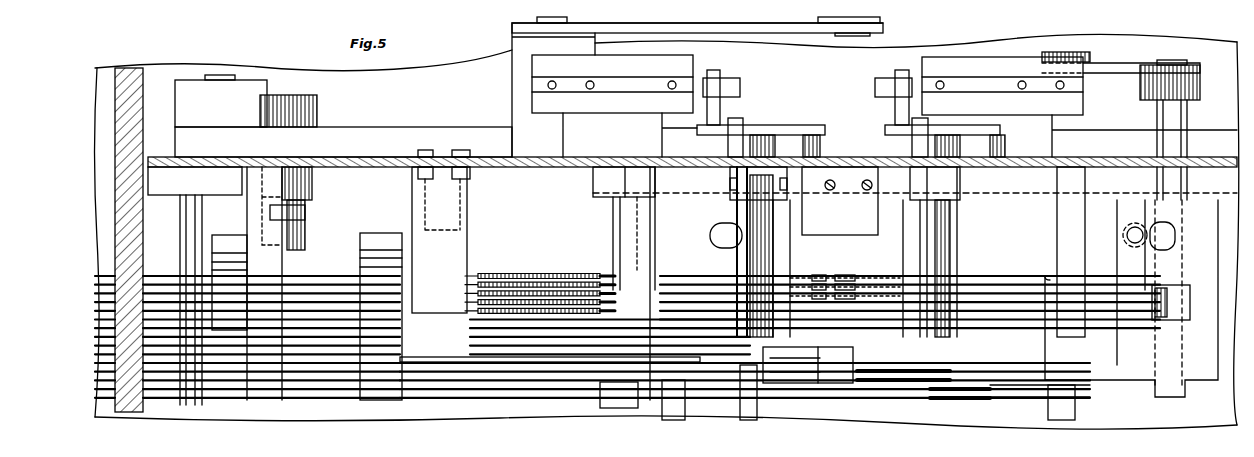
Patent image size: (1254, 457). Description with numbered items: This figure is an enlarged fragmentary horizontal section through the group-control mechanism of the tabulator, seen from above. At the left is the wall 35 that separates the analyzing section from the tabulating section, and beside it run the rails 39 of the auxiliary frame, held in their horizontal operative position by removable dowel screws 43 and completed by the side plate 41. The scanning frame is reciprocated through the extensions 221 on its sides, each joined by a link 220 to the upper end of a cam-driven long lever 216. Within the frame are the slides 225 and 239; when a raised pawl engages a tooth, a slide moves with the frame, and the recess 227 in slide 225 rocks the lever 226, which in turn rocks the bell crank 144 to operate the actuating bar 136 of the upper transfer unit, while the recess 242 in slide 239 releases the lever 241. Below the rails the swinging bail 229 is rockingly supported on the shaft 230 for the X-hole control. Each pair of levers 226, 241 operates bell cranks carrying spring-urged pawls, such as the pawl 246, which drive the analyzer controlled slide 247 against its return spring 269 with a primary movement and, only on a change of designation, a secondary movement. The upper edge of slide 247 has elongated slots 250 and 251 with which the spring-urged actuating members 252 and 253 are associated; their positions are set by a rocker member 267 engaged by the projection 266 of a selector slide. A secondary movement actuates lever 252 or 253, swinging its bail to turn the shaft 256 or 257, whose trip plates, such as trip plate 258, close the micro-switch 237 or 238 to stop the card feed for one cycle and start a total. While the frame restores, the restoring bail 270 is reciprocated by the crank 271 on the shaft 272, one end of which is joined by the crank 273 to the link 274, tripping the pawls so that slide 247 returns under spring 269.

The wall 35 is at (143, 110).
The dowel screws 43 is at (225, 78).
The rails 39 is at (452, 130).
The side plate 41 is at (386, 157).
The extensions 221 is at (520, 95).
The link 220 is at (776, 33).
The long lever 216 is at (882, 22).
The micro-switch 238 is at (685, 66).
The micro-switch 237 is at (922, 63).
The trip plate 258 is at (806, 125).
The shaft 256 is at (752, 120).
The shaft 257 is at (938, 120).
The link 274 is at (1092, 57).
The crank 273 is at (1092, 70).
The shaft 272 is at (1182, 118).
The bell crank 144 is at (208, 245).
The actuating bar 136 is at (153, 273).
The swinging bail 229 is at (310, 200).
The shaft 230 is at (306, 230).
The lever 226 is at (346, 275).
The return spring 269 is at (552, 273).
The analyzer controlled slide 247 is at (605, 274).
The actuating member 252 is at (720, 275).
The projection 266 is at (850, 275).
The rocker member 267 is at (820, 274).
The actuating member 253 is at (1000, 276).
The elongated slot 251 is at (1045, 276).
The restoring bail 270 is at (1210, 382).
The crank 271 is at (1180, 285).
The elongated slot 250 is at (670, 364).
The lever 241 is at (800, 370).
The slide 225 is at (458, 415).
The recess 227 is at (540, 420).
The slide 239 is at (900, 418).
The recess 242 is at (955, 420).
The spring-urged pawl 246 is at (1046, 370).